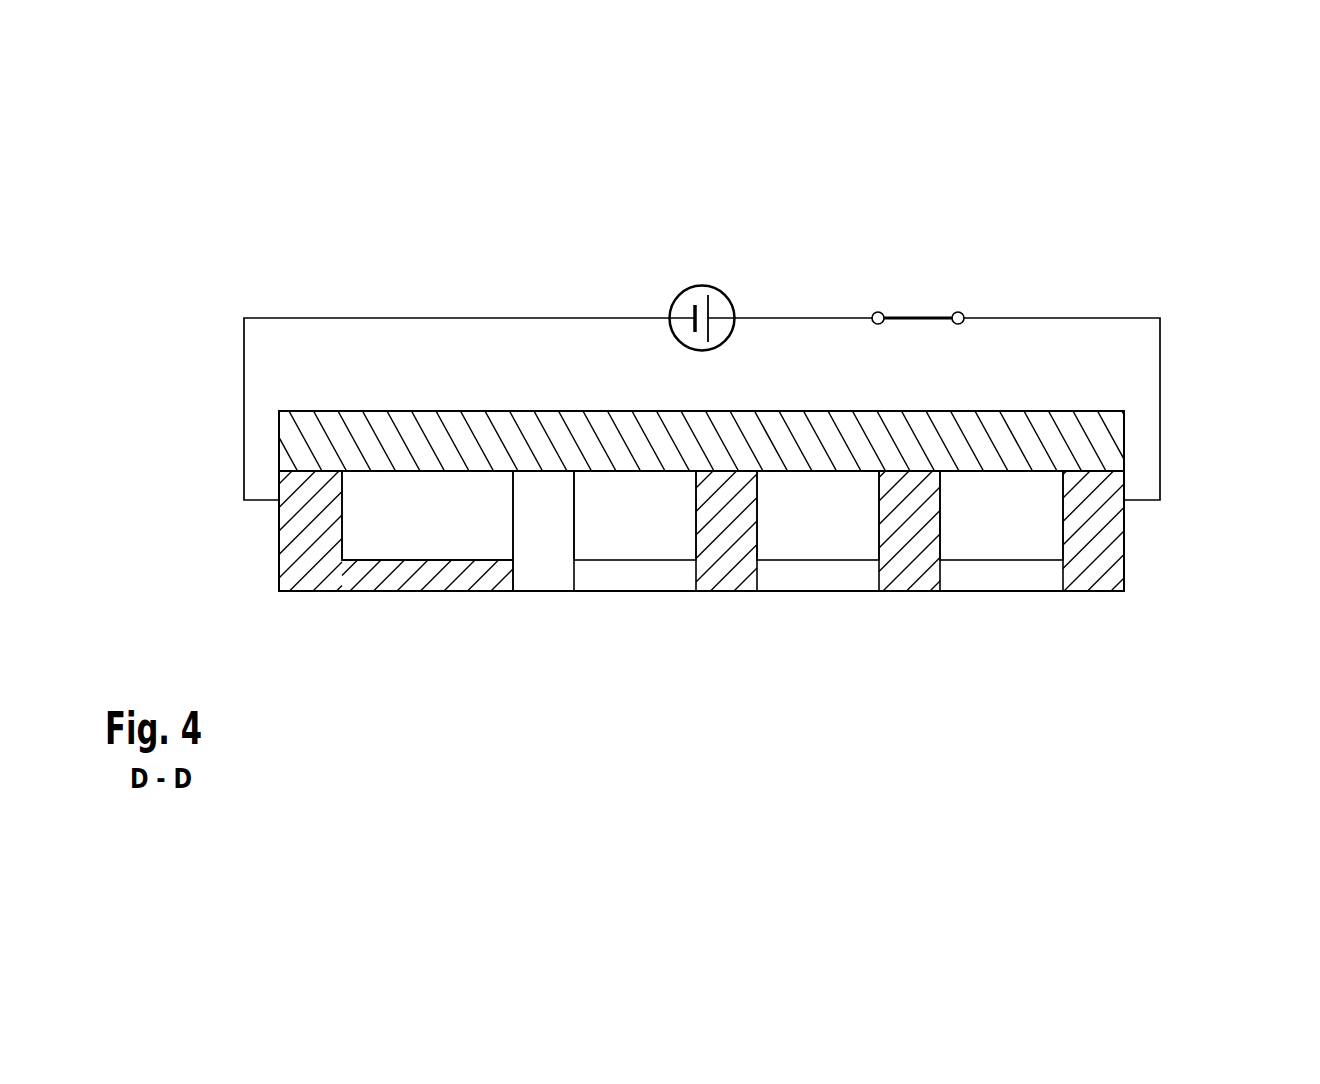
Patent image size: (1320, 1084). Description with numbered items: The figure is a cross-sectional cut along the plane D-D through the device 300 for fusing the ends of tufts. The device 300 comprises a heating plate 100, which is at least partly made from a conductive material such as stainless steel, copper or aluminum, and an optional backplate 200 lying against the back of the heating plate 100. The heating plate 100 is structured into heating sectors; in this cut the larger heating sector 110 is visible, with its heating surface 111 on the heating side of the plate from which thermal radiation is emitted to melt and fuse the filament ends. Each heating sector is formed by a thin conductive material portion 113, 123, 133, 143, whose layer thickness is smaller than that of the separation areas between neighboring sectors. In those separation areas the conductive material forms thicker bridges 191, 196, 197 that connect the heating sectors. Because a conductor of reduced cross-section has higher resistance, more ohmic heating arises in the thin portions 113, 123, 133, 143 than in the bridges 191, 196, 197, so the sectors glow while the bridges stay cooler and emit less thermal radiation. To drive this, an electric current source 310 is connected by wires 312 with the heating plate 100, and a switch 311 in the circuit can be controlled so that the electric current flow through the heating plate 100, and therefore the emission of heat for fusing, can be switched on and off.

The heating plate 100 is at (740, 527).
The heating sector 110 is at (410, 485).
The heating surface 111 is at (428, 594).
The conductive material portion 113 is at (384, 573).
The conductive material portion 123 is at (637, 575).
The conductive material portion 133 is at (820, 575).
The conductive material portion 143 is at (1003, 578).
The bridge 191 is at (308, 533).
The bridge 196 is at (727, 560).
The bridge 197 is at (912, 560).
The backplate 200 is at (1090, 447).
The device for fusing the ends of tufts 300 is at (779, 345).
The electric current source 310 is at (701, 285).
The switch 311 is at (917, 318).
The wires 312 is at (1072, 318).